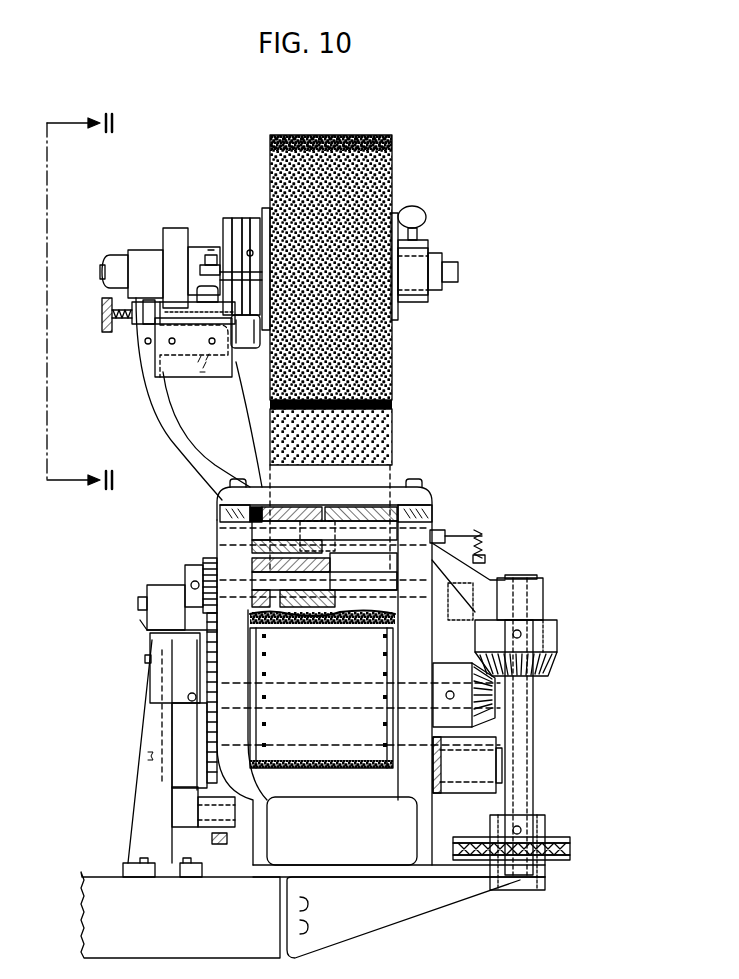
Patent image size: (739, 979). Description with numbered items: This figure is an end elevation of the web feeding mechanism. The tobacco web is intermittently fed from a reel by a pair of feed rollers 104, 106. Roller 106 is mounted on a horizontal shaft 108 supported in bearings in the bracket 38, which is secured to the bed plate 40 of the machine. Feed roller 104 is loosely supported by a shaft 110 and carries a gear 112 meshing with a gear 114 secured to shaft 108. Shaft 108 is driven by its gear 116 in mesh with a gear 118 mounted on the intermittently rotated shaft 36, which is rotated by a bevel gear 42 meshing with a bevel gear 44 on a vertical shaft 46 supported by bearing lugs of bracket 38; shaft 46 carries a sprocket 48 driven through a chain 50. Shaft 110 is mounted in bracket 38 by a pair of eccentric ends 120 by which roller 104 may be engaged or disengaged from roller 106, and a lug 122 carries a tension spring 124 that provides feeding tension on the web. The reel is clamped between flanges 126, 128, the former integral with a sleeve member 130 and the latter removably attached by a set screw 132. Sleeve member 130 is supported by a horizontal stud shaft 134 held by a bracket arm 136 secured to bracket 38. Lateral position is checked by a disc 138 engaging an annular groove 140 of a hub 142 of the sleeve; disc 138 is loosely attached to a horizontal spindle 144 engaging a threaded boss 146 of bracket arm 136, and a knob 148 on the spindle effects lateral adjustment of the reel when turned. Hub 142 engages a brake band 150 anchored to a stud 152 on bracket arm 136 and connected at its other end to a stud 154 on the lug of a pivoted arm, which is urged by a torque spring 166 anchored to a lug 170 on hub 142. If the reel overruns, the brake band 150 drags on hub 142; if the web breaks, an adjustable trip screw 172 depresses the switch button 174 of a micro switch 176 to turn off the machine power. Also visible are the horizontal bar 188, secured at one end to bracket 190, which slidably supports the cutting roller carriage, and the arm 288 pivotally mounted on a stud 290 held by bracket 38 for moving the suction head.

The intermittently rotated shaft 36 is at (306, 712).
The bracket 38 is at (403, 800).
The bed plate 40 is at (186, 942).
The bevel gear 42 is at (487, 728).
The bevel gear 44 is at (540, 676).
The vertical shaft 46 is at (506, 578).
The sprocket 48 is at (568, 852).
The chain 50 is at (553, 838).
The feed roller 104 is at (296, 512).
The feed roller 106 is at (283, 622).
The horizontal shaft 108 is at (152, 582).
The shaft 110 is at (260, 537).
The gear 112 is at (258, 507).
The gear 114 is at (257, 603).
The gear 116 is at (205, 560).
The gear 118 is at (207, 728).
The eccentric ends 120 is at (222, 520).
The lug 122 is at (440, 530).
The tension spring 124 is at (486, 540).
The flange 126 is at (266, 208).
The flange 128 is at (396, 213).
The sleeve member 130 is at (426, 296).
The set screw 132 is at (426, 219).
The horizontal stud shaft 134 is at (450, 264).
The bracket arm 136 is at (145, 428).
The disc 138 is at (248, 360).
The annular groove 140 is at (228, 218).
The hub 142 is at (211, 255).
The horizontal spindle 144 is at (120, 322).
The threaded boss 146 is at (148, 322).
The knob 148 is at (104, 332).
The brake band 150 is at (254, 218).
The stud 152 is at (236, 370).
The stud 154 is at (246, 218).
The torque spring 166 is at (200, 247).
The lug 170 is at (190, 260).
The trip screw 172 is at (176, 228).
The switch button 174 is at (207, 290).
The micro switch 176 is at (177, 368).
The horizontal bar 188 is at (182, 760).
The bracket 190 is at (133, 830).
The arm 288 is at (452, 790).
The stud 290 is at (500, 768).